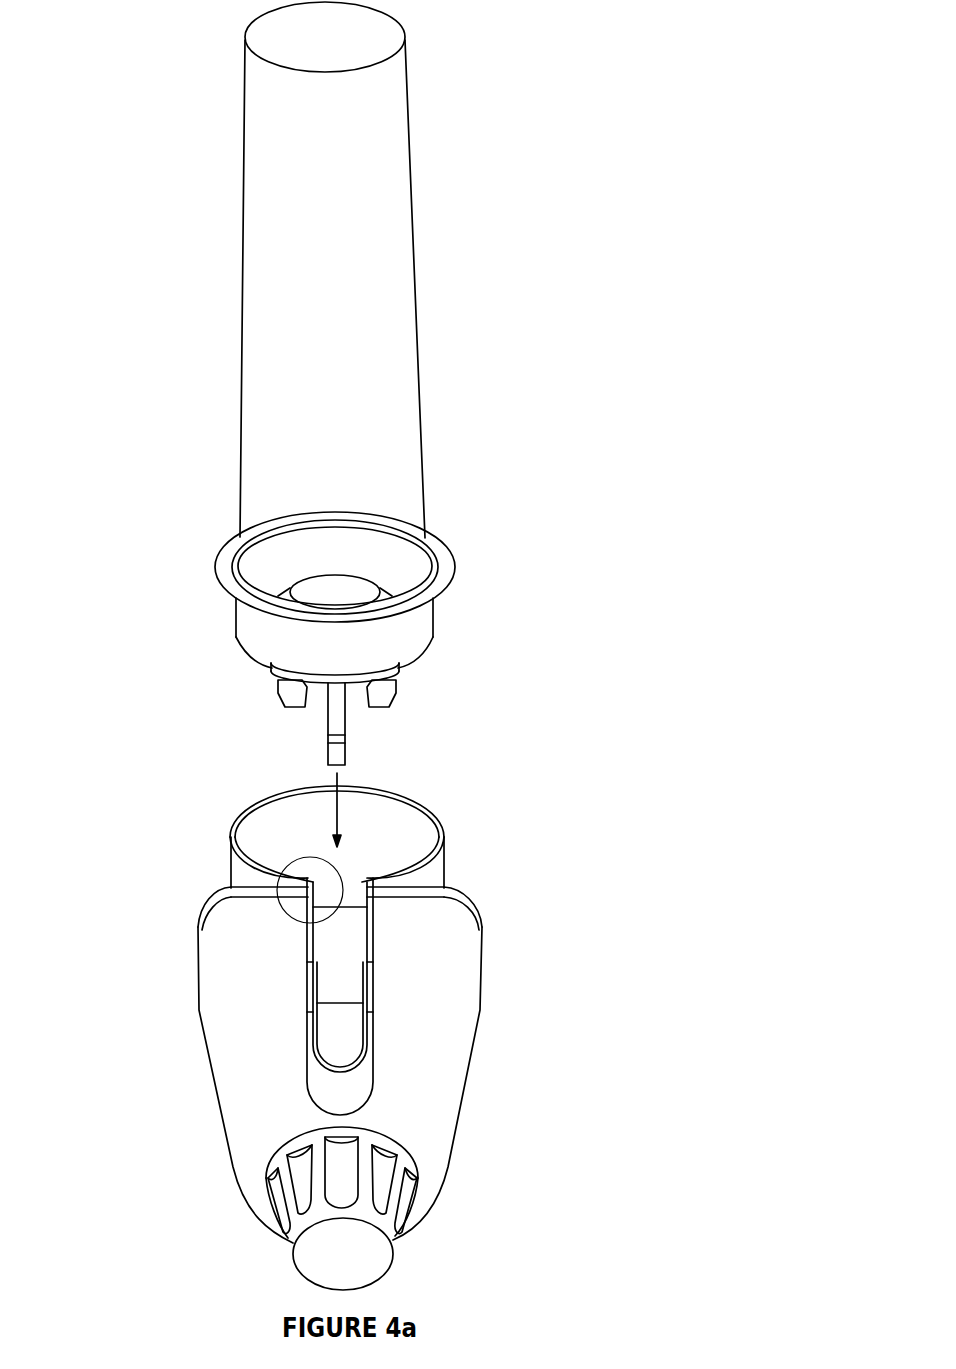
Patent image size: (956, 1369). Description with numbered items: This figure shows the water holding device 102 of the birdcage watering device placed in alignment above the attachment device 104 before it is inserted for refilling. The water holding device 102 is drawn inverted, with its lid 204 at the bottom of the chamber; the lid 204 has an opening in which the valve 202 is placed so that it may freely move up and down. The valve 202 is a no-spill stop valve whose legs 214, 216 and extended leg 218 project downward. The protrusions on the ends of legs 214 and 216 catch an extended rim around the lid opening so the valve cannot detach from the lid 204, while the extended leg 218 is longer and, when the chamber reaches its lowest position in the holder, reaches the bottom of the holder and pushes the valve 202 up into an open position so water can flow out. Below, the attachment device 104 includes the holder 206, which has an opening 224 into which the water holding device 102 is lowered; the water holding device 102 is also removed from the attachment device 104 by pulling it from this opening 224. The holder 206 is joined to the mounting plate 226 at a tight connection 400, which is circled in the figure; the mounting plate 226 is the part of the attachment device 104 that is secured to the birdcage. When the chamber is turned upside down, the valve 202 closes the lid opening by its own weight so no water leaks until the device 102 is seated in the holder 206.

The water holding device 102 is at (512, 262).
The attachment device 104 is at (575, 918).
The valve 202 is at (378, 571).
The lid 204 is at (408, 636).
The leg 214 is at (293, 697).
The leg 216 is at (390, 702).
The extended leg 218 is at (338, 752).
The holder 206 is at (460, 857).
The opening 224 is at (288, 830).
The tight connection 400 is at (262, 877).
The mounting plate 226 is at (430, 1030).